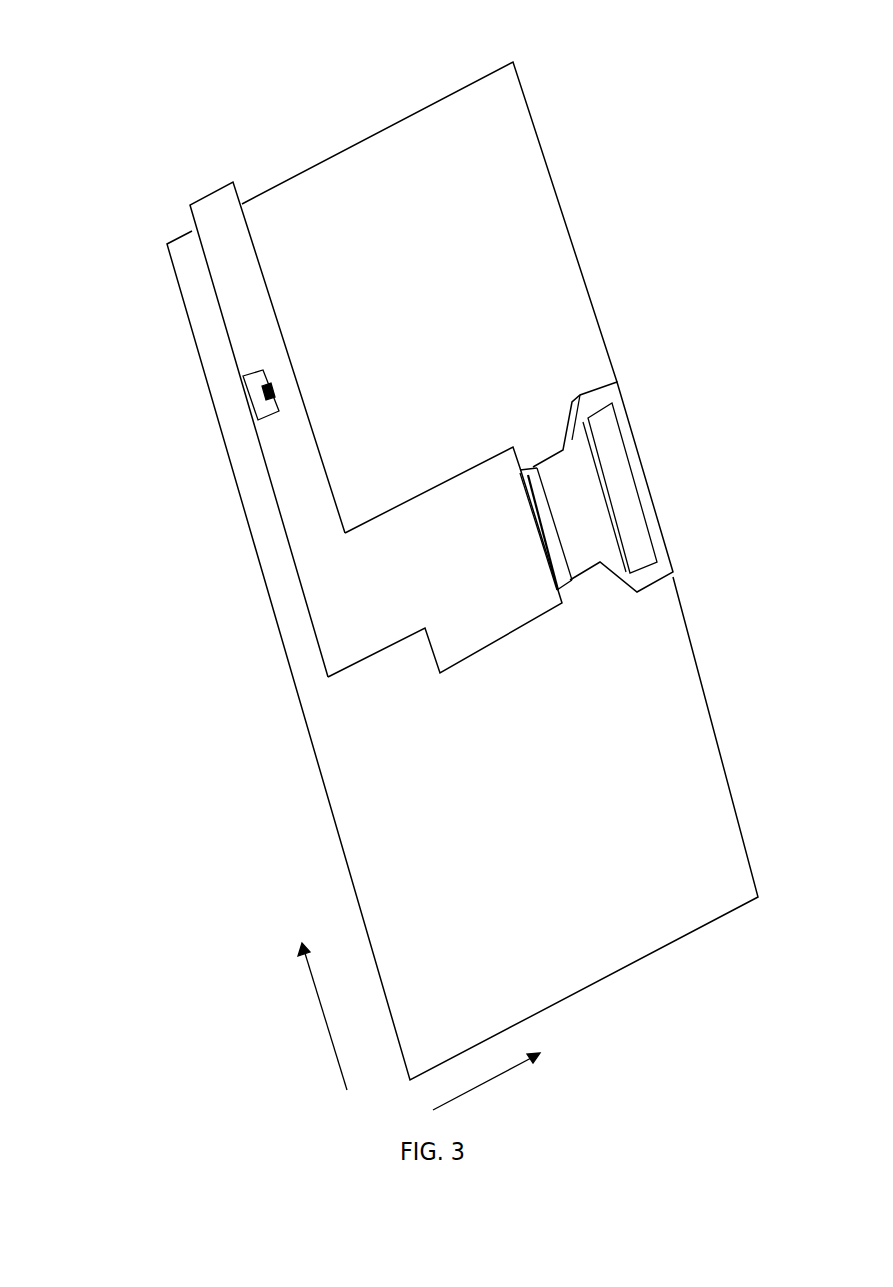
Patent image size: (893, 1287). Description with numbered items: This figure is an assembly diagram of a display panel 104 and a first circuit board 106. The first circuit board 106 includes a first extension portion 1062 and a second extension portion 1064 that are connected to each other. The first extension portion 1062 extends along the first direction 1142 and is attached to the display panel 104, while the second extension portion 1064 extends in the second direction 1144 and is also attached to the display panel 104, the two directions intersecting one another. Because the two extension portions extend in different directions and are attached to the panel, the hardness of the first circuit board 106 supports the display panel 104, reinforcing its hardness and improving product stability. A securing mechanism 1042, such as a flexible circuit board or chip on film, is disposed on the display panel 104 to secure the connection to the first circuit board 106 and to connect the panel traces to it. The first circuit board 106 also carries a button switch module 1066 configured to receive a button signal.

The display panel 104 is at (365, 153).
The first circuit board 106 is at (310, 381).
The first extension portion 1062 is at (215, 222).
The second extension portion 1064 is at (437, 578).
The button switch module 1066 is at (242, 378).
The securing mechanism 1042 is at (592, 517).
The first direction 1142 is at (292, 1016).
The second direction 1144 is at (525, 1081).